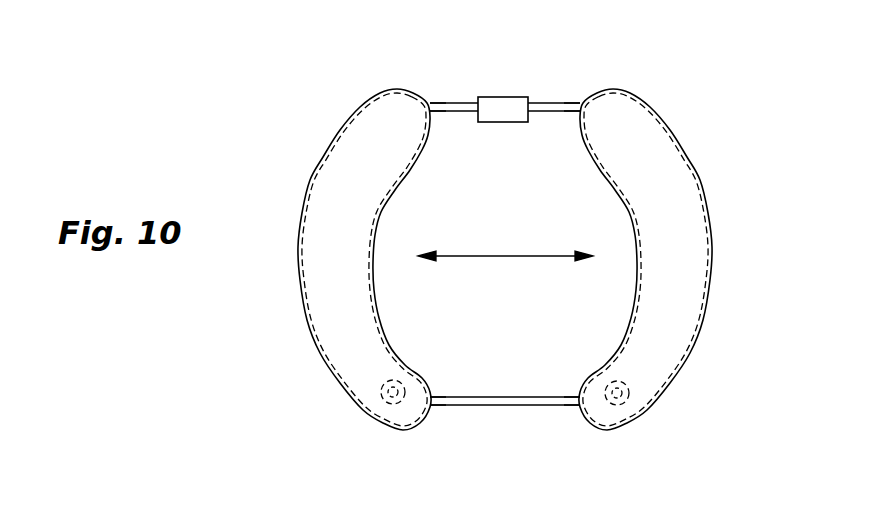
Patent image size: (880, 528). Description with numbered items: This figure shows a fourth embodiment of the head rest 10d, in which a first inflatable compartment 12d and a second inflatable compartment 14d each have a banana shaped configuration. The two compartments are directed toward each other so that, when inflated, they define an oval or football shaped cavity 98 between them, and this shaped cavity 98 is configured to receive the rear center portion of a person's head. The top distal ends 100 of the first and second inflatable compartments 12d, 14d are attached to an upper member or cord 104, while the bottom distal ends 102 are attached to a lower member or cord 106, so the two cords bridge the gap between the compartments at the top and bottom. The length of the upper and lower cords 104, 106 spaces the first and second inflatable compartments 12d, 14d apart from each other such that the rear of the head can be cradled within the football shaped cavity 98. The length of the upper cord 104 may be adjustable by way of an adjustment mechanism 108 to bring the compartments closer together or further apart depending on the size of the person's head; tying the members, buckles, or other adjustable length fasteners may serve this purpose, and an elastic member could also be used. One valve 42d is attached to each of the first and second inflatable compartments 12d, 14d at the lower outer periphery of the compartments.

The head rest 10d is at (687, 82).
The first inflatable compartment 12d is at (657, 137).
The second inflatable compartment 14d is at (360, 131).
The valve 42d is at (386, 400).
The shaped cavity 98 is at (520, 230).
The top distal ends 100 is at (427, 101).
The bottom distal ends 102 is at (432, 404).
The upper cord 104 is at (555, 102).
The lower cord 106 is at (507, 406).
The adjustment mechanism 108 is at (497, 97).